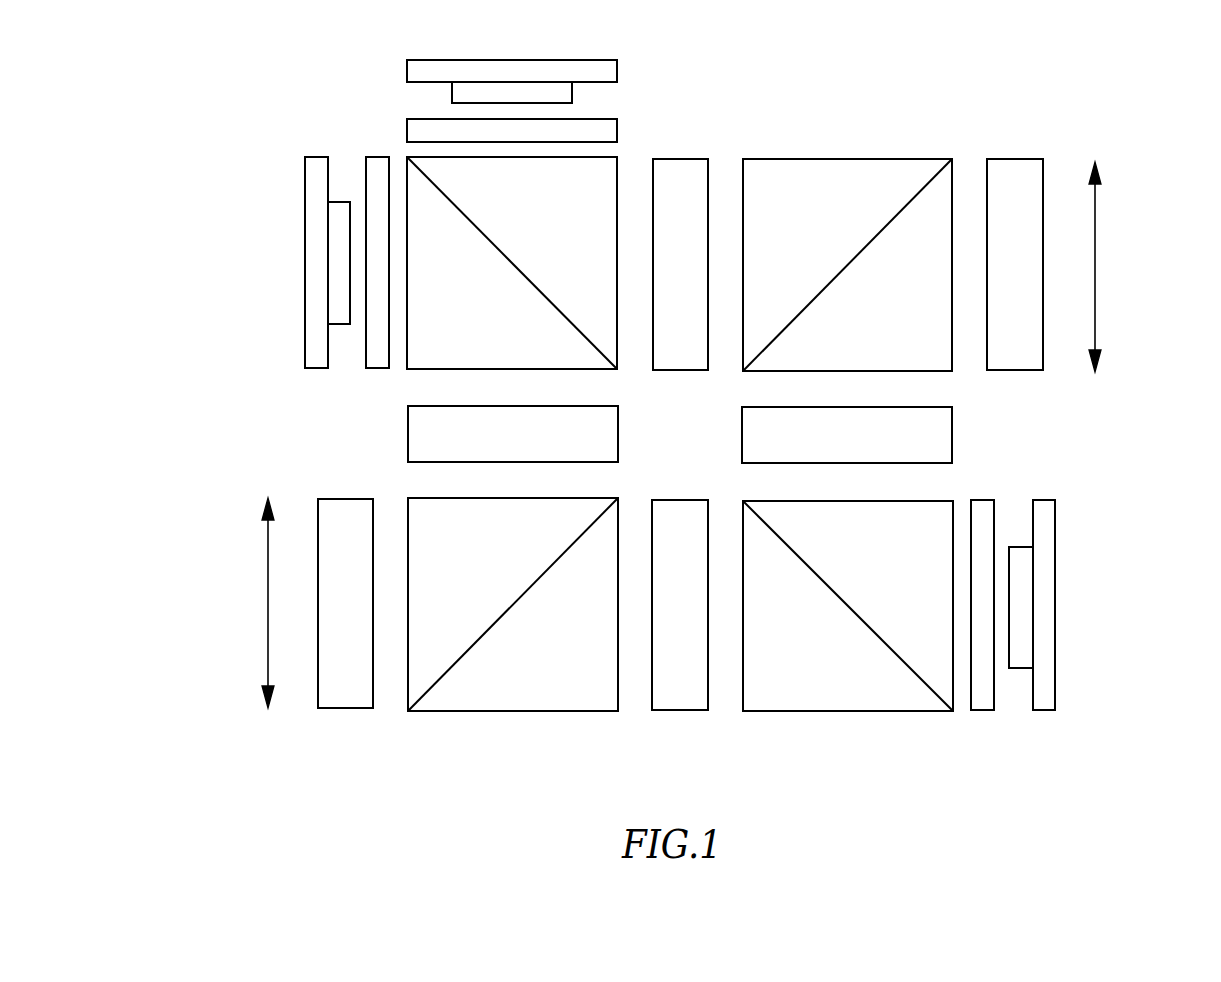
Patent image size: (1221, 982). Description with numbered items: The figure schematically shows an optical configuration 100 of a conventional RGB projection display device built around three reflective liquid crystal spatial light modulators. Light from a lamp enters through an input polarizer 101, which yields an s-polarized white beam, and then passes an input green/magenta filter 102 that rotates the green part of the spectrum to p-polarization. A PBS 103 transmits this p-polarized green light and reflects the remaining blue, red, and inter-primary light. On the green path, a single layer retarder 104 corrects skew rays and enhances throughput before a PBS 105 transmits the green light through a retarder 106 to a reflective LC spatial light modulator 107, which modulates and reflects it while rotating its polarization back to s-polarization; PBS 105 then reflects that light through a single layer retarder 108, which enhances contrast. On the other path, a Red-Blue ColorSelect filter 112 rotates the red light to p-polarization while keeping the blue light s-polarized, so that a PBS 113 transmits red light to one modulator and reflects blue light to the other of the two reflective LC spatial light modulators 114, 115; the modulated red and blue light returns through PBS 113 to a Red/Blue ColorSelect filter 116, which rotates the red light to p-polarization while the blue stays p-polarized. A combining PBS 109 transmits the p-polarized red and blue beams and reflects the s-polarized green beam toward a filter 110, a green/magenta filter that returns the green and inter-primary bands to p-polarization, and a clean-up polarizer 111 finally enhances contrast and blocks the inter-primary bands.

The optical configuration 100 is at (155, 430).
The input polarizer 101 is at (268, 603).
The input green/magenta filter 102 is at (348, 708).
The PBS 103 is at (513, 711).
The single layer retarder 104 is at (678, 710).
The PBS 105 is at (848, 711).
The retarder 106 is at (983, 710).
The reflective LC spatial light modulator 107 is at (1055, 605).
The single layer retarder 108 is at (952, 433).
The combining PBS 109 is at (847, 159).
The filter 110 is at (1012, 159).
The clean-up polarizer 111 is at (1095, 265).
The Red-Blue ColorSelect filter 112 is at (408, 430).
The PBS 113 is at (407, 369).
The reflective LC spatial light modulator 114 is at (305, 260).
The reflective LC spatial light modulator 115 is at (508, 59).
The Red/Blue ColorSelect filter 116 is at (680, 159).